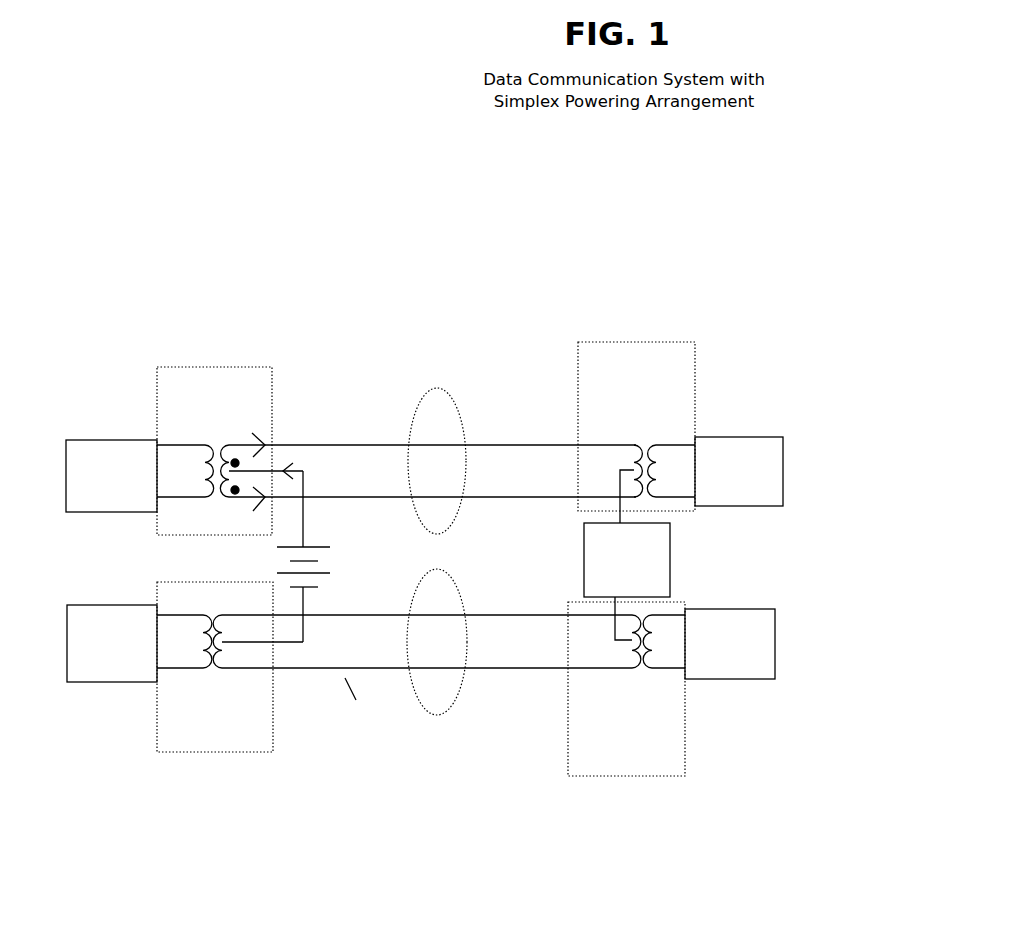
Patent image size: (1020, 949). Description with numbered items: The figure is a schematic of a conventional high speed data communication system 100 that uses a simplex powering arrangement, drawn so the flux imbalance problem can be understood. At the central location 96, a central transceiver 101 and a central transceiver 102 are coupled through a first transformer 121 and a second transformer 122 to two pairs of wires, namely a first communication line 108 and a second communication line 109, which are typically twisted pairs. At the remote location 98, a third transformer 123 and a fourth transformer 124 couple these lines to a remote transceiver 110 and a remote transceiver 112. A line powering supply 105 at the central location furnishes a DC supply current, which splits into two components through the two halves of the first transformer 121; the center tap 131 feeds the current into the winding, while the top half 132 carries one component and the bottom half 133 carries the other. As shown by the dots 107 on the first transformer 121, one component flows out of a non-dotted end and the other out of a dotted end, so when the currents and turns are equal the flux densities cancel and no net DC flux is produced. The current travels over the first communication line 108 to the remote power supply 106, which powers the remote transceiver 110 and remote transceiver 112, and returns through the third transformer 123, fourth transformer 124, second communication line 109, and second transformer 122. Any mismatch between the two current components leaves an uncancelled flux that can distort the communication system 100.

The data communication system 100 is at (391, 256).
The central location 96 is at (205, 734).
The remote location 98 is at (668, 728).
The central transceiver 101 is at (100, 437).
The central transceiver 102 is at (100, 605).
The line powering supply 105 is at (303, 547).
The power supply 106 is at (565, 562).
The dots 107 is at (215, 455).
The communication line 108 is at (440, 388).
The second communication line 109 is at (440, 716).
The remote transceiver 110 is at (722, 437).
The remote transceiver 112 is at (777, 638).
The first transformer 121 is at (226, 367).
The second transformer 122 is at (197, 753).
The third transformer 123 is at (668, 342).
The fourth transformer 124 is at (620, 776).
The center tap of secondary winding 131 is at (278, 462).
The upper half of secondary winding 132 is at (263, 437).
The lower half of secondary winding 133 is at (267, 503).